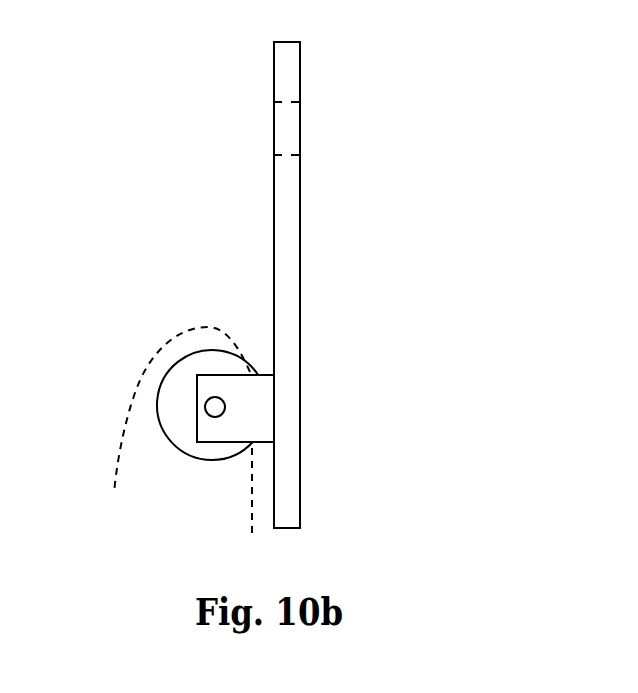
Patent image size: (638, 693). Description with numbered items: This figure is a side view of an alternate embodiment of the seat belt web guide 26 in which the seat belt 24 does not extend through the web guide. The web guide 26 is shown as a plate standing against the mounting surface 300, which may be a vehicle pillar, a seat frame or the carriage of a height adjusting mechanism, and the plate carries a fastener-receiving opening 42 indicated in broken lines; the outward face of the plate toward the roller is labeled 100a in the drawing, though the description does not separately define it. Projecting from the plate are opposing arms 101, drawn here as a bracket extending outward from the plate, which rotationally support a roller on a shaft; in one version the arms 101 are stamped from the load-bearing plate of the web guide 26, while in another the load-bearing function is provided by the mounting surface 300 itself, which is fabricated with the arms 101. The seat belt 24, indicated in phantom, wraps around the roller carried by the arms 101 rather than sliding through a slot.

The web guide 26 is at (364, 285).
The mounting surface 300 is at (285, 79).
The fastener-receiving opening 42 is at (286, 151).
The guide surface of guide member 100a is at (262, 177).
The opposing arms 101 is at (228, 395).
The seat belt 24 is at (118, 468).